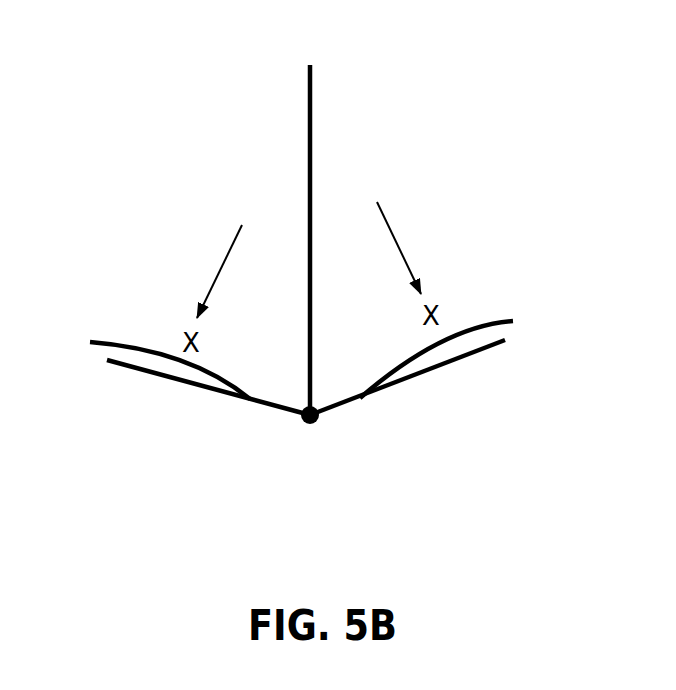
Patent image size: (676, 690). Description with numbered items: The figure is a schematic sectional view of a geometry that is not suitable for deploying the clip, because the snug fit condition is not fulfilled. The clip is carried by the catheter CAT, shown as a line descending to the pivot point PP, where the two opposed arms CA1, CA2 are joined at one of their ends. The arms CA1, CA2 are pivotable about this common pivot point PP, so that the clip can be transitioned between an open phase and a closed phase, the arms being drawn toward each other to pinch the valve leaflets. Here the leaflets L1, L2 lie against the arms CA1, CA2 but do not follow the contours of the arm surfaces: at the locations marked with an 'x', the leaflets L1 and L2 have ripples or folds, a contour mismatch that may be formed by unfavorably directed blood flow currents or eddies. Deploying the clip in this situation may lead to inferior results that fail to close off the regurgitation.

The catheter CAT is at (338, 107).
The first clip arm CA1 is at (195, 390).
The second clip arm CA2 is at (418, 384).
The first leaflet L1 is at (152, 317).
The second leaflet L2 is at (475, 308).
The pivot point PP is at (296, 436).